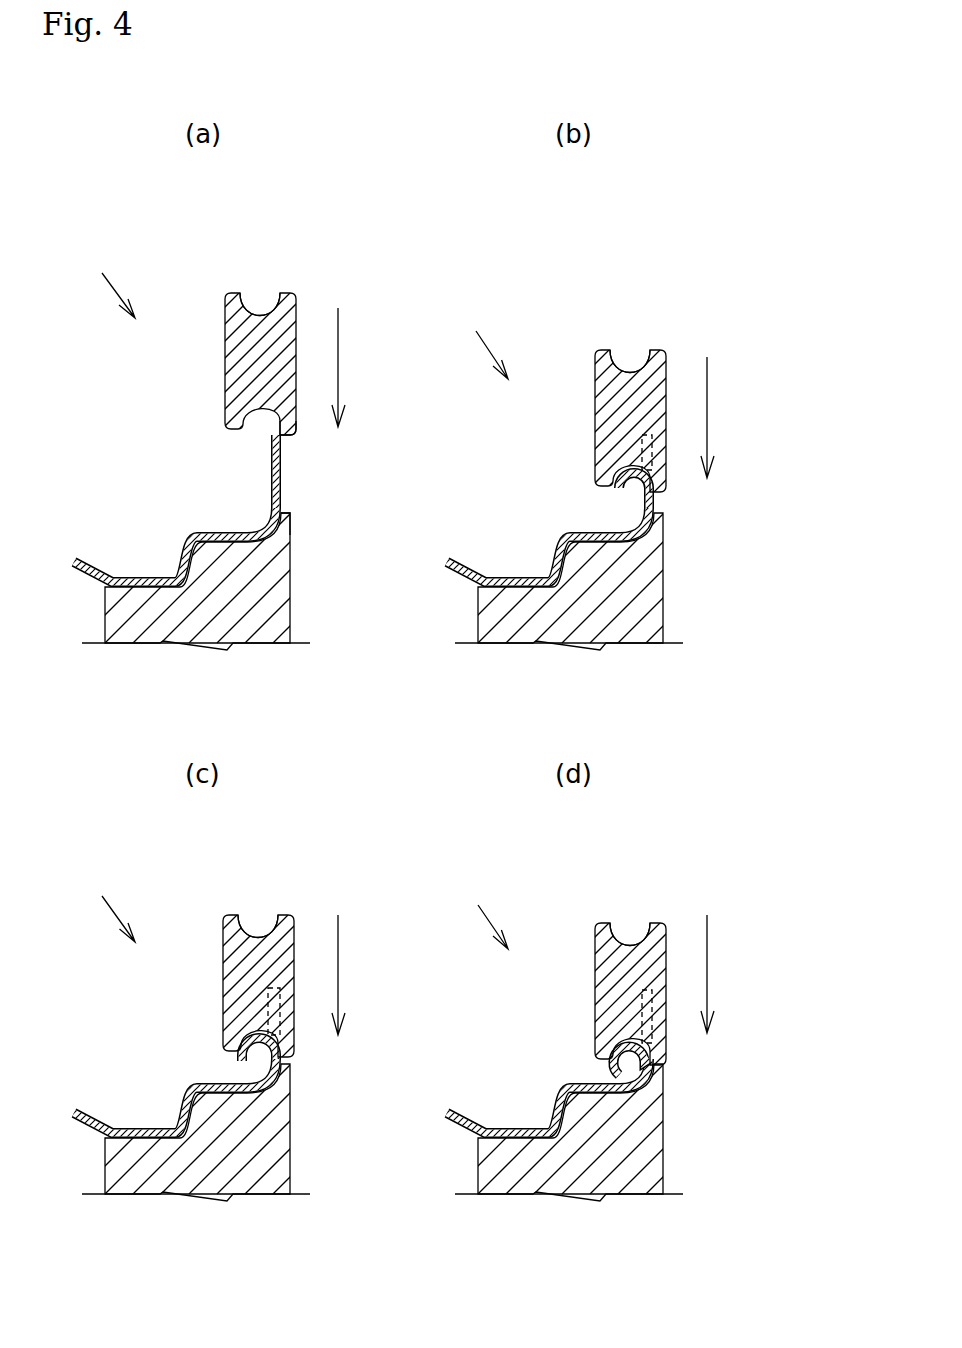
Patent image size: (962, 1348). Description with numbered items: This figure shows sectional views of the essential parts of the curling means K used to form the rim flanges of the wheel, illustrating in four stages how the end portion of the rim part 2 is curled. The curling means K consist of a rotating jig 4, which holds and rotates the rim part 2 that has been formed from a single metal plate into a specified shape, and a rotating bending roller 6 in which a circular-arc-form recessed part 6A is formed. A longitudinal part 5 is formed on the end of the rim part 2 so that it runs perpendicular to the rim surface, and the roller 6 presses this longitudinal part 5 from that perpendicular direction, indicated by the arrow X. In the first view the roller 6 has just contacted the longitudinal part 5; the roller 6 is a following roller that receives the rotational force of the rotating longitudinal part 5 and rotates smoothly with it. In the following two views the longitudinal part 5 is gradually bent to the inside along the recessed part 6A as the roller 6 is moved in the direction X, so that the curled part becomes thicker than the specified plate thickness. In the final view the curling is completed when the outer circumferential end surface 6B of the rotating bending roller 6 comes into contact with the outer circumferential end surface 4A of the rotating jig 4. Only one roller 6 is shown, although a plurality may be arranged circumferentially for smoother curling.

The rim part 2 is at (148, 580).
The rotating jig 4 is at (292, 578).
The outer circumferential end surface of the rotating jig 4A is at (287, 512).
The longitudinal part 5 is at (271, 470).
The rotating bending roller 6 is at (225, 353).
The circular-arc-form recessed part 6A is at (257, 315).
The outer circumferential end surface of the rotating bending roller 6B is at (283, 435).
The curling means K is at (295, 598).
The pressing direction X is at (338, 350).